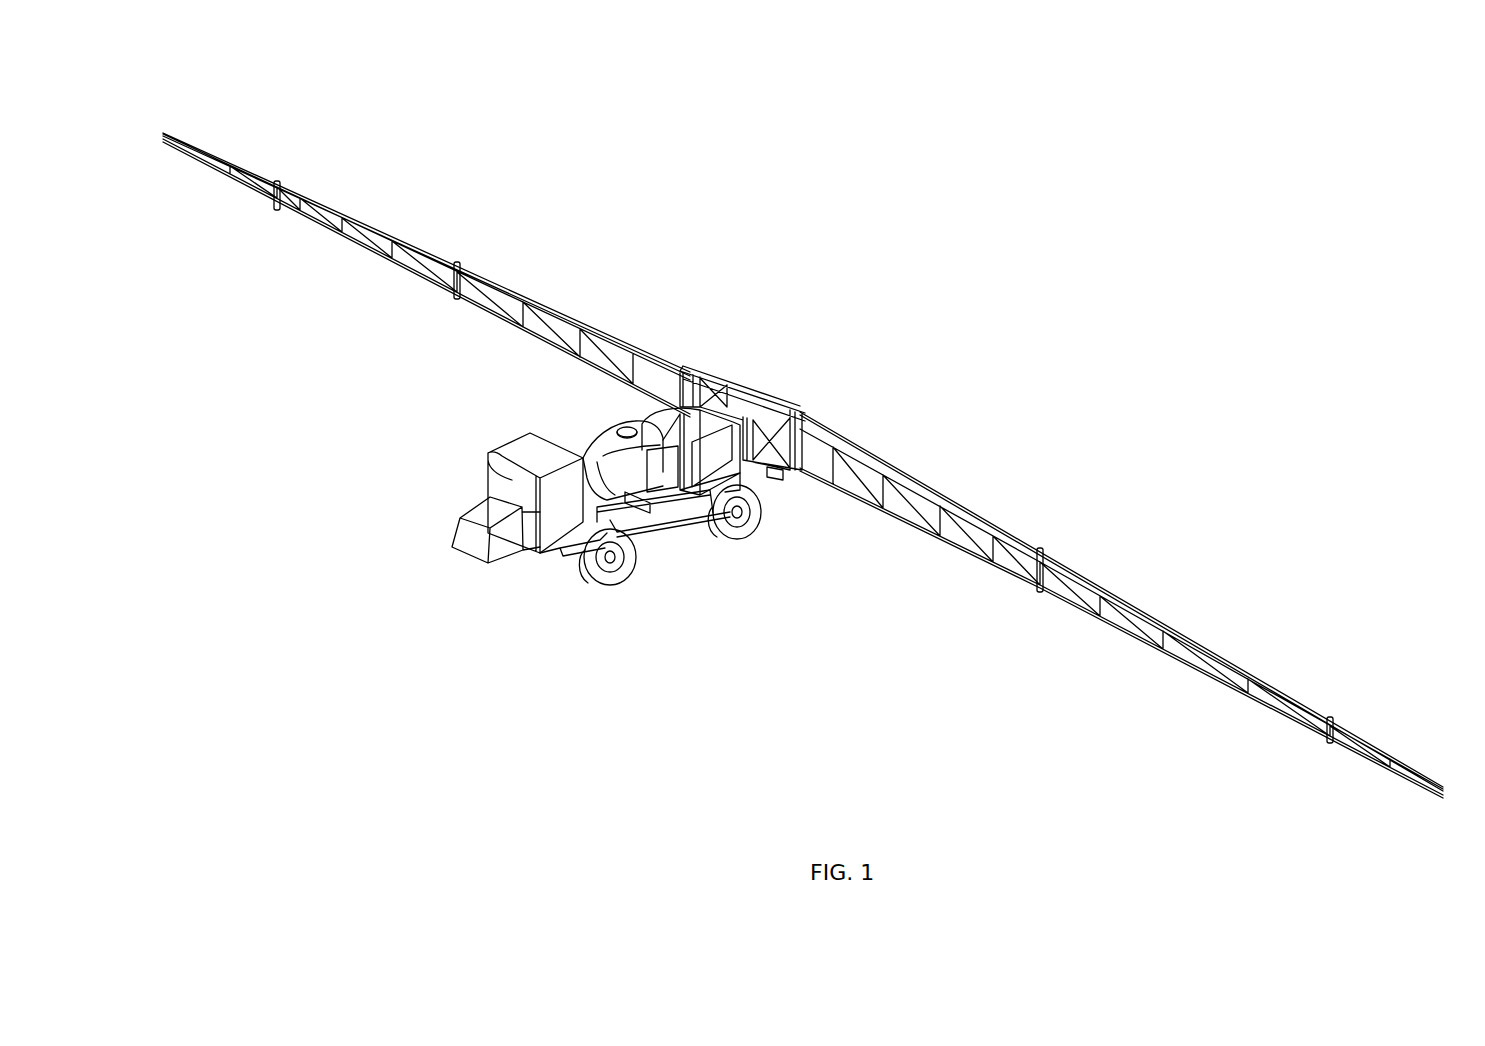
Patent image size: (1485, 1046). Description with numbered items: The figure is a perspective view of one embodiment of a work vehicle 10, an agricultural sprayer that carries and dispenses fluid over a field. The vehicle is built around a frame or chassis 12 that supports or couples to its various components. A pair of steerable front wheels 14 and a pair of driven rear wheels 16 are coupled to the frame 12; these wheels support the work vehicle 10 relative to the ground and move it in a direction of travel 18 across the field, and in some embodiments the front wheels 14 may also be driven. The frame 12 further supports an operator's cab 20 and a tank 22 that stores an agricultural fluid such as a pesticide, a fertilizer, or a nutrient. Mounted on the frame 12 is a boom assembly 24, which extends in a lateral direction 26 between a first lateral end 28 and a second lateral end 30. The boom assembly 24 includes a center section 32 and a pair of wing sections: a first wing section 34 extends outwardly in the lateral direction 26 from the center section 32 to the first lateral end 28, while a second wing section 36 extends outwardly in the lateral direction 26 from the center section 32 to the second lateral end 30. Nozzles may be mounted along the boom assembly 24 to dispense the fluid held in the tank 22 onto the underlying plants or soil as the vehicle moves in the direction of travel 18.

The work vehicle 10 is at (258, 128).
The frame or chassis 12 is at (650, 527).
The steerable front wheels 14 is at (605, 584).
The driven rear wheels 16 is at (752, 535).
The direction of travel 18 is at (358, 597).
The operator's cab 20 is at (529, 496).
The tank 22 is at (596, 441).
The boom assembly 24 is at (862, 418).
The lateral direction 26 is at (996, 308).
The first lateral end 28 is at (1448, 760).
The second lateral end 30 is at (126, 110).
The center section 32 is at (760, 393).
The first wing section 34 is at (1155, 620).
The second wing section 36 is at (351, 220).